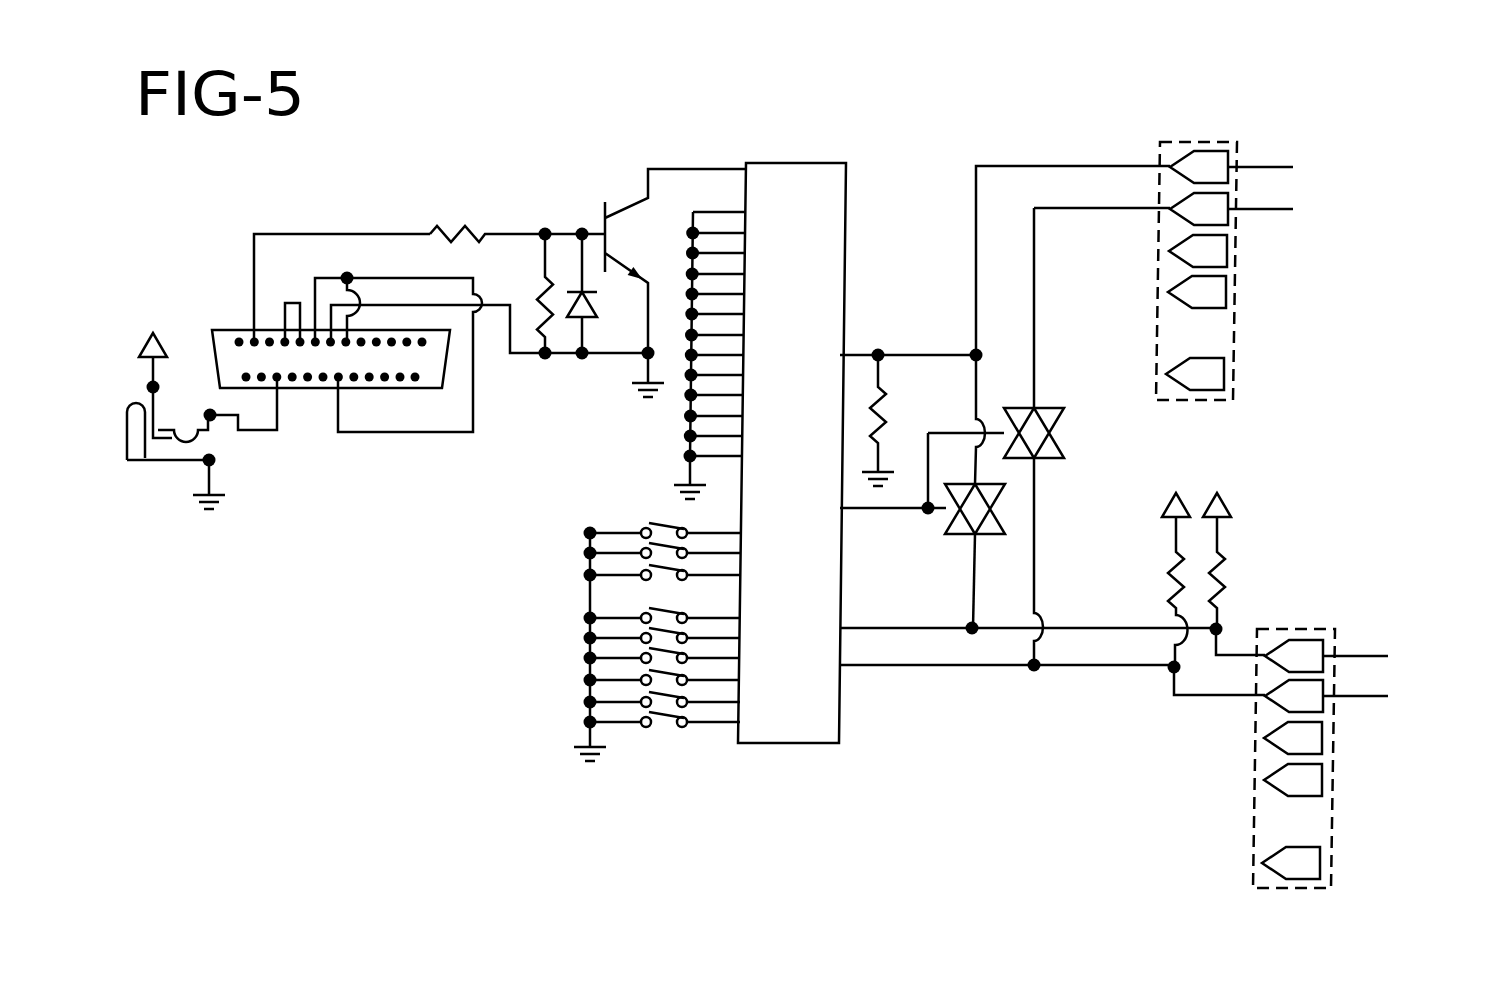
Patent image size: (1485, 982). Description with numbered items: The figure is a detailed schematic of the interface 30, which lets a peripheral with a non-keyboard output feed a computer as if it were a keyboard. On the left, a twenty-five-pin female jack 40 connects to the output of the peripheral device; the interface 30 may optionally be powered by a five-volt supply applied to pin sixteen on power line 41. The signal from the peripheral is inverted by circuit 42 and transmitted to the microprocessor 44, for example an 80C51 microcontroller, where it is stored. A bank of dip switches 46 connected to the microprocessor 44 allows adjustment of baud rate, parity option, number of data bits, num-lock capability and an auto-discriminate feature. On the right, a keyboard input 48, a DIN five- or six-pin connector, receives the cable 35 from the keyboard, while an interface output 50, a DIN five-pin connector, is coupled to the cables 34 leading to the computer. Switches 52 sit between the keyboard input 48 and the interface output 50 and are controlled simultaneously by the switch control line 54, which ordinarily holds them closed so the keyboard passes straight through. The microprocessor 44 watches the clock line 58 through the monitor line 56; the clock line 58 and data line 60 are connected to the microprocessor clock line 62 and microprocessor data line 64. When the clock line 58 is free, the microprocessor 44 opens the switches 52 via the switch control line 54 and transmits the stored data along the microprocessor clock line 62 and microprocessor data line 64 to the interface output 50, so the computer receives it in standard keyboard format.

The interface 30 is at (892, 155).
The cables 34 is at (1377, 657).
The cable 35 is at (1280, 168).
The 25-pin female jack 40 is at (232, 330).
The power line 41 is at (225, 417).
The circuit 42 is at (565, 222).
The microprocessor 44 is at (795, 162).
The dip switches 46 is at (556, 522).
The keyboard input 48 is at (1237, 267).
The interface output 50 is at (1333, 740).
The switches 52 is at (1057, 447).
The switch control line 54 is at (862, 510).
The monitor line 56 is at (860, 353).
The clock line 58 is at (1012, 162).
The data line 60 is at (1037, 320).
The microprocessor clock line 62 is at (927, 626).
The microprocessor data line 64 is at (857, 667).